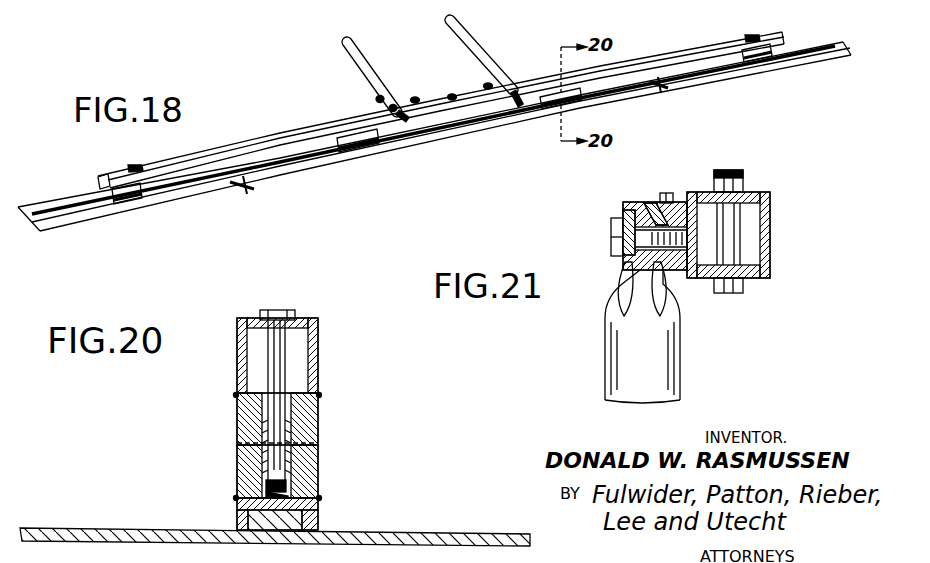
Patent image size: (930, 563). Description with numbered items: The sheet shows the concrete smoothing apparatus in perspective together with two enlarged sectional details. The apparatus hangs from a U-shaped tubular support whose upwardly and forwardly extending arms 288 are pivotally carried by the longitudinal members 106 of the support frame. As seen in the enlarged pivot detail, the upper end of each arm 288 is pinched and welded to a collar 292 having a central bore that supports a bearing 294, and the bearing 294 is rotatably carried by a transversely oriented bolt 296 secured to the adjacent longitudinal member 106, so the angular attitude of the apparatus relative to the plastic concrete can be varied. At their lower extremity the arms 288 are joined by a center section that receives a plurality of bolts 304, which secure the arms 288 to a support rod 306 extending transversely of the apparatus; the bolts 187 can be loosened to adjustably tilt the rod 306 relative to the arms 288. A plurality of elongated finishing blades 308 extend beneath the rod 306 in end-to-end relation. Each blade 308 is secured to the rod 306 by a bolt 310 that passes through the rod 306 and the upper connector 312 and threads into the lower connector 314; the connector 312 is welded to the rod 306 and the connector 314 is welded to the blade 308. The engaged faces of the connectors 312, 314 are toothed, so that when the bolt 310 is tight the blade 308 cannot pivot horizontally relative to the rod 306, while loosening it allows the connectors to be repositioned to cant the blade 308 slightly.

In FIG. 21, the longitudinal member 106 is at (770, 220).
In FIG. 18, the bolt 187 is at (380, 98).
In FIG. 18, the arm 288 is at (358, 52).
In FIG. 21, the arm 288 is at (680, 347).
In FIG. 21, the collar 292 is at (650, 200).
In FIG. 21, the bearing 294 is at (625, 212).
In FIG. 21, the bolt 296 is at (612, 234).
In FIG. 18, the bolt 304 is at (488, 85).
In FIG. 18, the support rod 306 is at (292, 130).
In FIG. 20, the support rod 306 is at (318, 346).
In FIG. 18, the finishing blade 308 is at (266, 176).
In FIG. 20, the finishing blade 308 is at (408, 533).
In FIG. 18, the bolt 310 is at (143, 154).
In FIG. 20, the bolt 310 is at (285, 312).
In FIG. 20, the upper connector 312 is at (318, 416).
In FIG. 20, the lower connector 314 is at (318, 476).